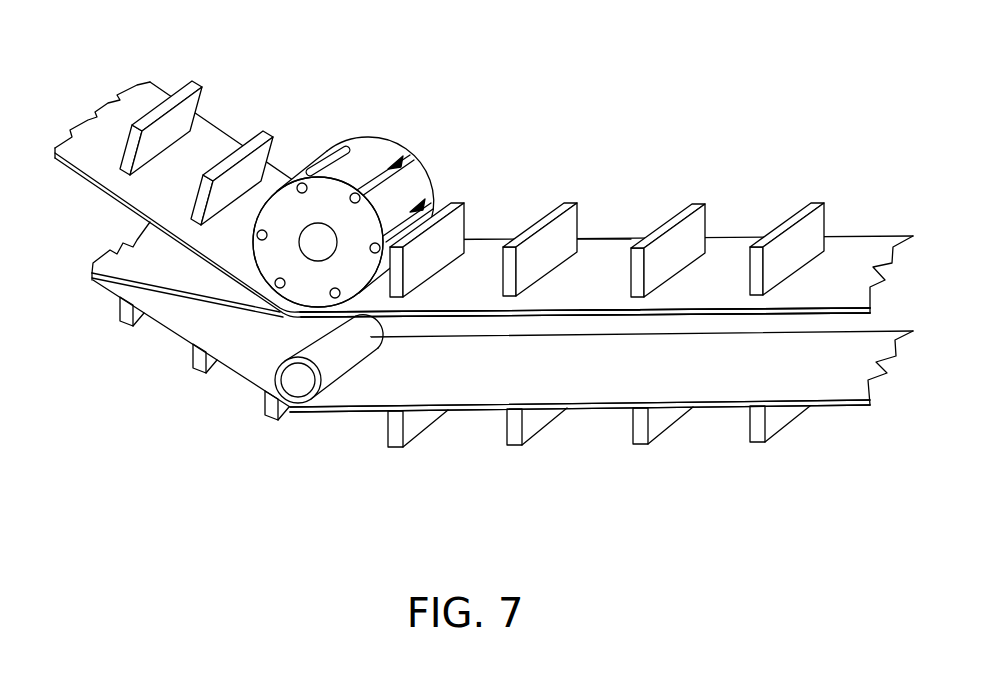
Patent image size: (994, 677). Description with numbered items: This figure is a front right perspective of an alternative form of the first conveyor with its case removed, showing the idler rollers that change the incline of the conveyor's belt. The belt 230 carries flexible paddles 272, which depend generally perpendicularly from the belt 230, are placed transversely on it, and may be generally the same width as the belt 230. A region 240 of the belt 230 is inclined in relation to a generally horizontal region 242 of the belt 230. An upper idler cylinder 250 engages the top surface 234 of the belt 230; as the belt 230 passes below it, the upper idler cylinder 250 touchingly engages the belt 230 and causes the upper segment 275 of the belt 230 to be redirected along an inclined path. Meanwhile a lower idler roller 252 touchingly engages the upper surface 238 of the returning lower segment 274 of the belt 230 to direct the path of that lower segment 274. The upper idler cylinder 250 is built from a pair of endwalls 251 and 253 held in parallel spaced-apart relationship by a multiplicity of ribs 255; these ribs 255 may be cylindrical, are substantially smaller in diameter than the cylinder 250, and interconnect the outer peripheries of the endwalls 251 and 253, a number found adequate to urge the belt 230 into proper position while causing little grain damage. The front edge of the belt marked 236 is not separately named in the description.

The belt 230 is at (485, 240).
The top surface 234 is at (600, 258).
The belt front edge 236 is at (445, 320).
The upper surface of lower segment 238 is at (457, 388).
The region 240 is at (150, 82).
The generally horizontal region 242 is at (848, 235).
The upper idler cylinder 250 is at (290, 180).
The endwall 251 is at (313, 300).
The lower idler roller 252 is at (328, 360).
The endwall 253 is at (387, 132).
The ribs 255 is at (417, 207).
The flexible paddles 272 is at (264, 130).
The lower segment 274 is at (572, 408).
The upper segment 275 is at (620, 236).